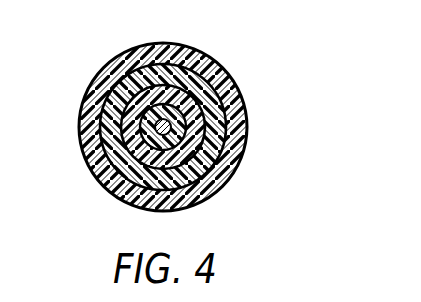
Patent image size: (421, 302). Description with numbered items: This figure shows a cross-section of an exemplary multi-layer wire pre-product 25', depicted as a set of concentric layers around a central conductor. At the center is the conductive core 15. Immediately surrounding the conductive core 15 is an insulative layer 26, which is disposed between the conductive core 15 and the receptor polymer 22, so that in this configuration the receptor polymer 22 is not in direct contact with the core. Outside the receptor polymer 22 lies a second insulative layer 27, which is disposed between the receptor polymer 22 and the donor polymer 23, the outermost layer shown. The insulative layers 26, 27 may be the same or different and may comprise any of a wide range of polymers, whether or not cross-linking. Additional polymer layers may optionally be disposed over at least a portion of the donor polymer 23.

The multi-layer pre-product 25' is at (162, 122).
The donor polymer 23 is at (125, 63).
The insulative layer 27 is at (113, 98).
The receptor polymer 22 is at (166, 92).
The insulative layer 26 is at (177, 137).
The conductive core 15 is at (172, 127).